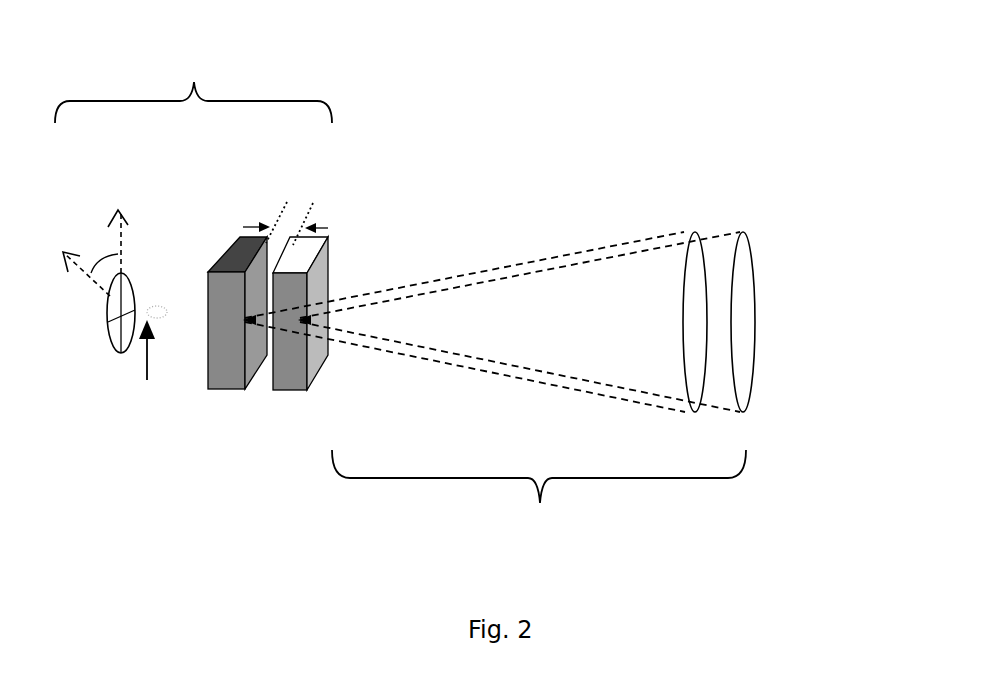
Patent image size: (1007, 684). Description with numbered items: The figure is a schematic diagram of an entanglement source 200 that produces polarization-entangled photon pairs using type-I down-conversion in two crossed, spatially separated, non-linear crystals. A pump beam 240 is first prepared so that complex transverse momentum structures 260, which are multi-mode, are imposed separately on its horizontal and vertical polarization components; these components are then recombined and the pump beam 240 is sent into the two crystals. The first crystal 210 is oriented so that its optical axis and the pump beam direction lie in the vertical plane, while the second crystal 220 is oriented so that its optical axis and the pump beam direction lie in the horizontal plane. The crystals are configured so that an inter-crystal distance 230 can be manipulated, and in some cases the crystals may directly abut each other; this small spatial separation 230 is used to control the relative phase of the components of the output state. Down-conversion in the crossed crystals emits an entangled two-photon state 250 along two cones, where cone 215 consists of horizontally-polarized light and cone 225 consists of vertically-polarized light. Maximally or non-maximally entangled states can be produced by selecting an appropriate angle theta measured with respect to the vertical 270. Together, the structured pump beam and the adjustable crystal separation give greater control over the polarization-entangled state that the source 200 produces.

The entanglement source 200 is at (193, 83).
The first crystal 210 is at (222, 390).
The second crystal 220 is at (290, 390).
The inter-crystal distance 230 is at (304, 203).
The cone 215 is at (635, 239).
The cone 225 is at (752, 262).
The pump beam 240 is at (160, 318).
The entangled two-photon state 250 is at (539, 496).
The complex transverse momentum structures 260 is at (75, 255).
The vertical 270 is at (124, 223).